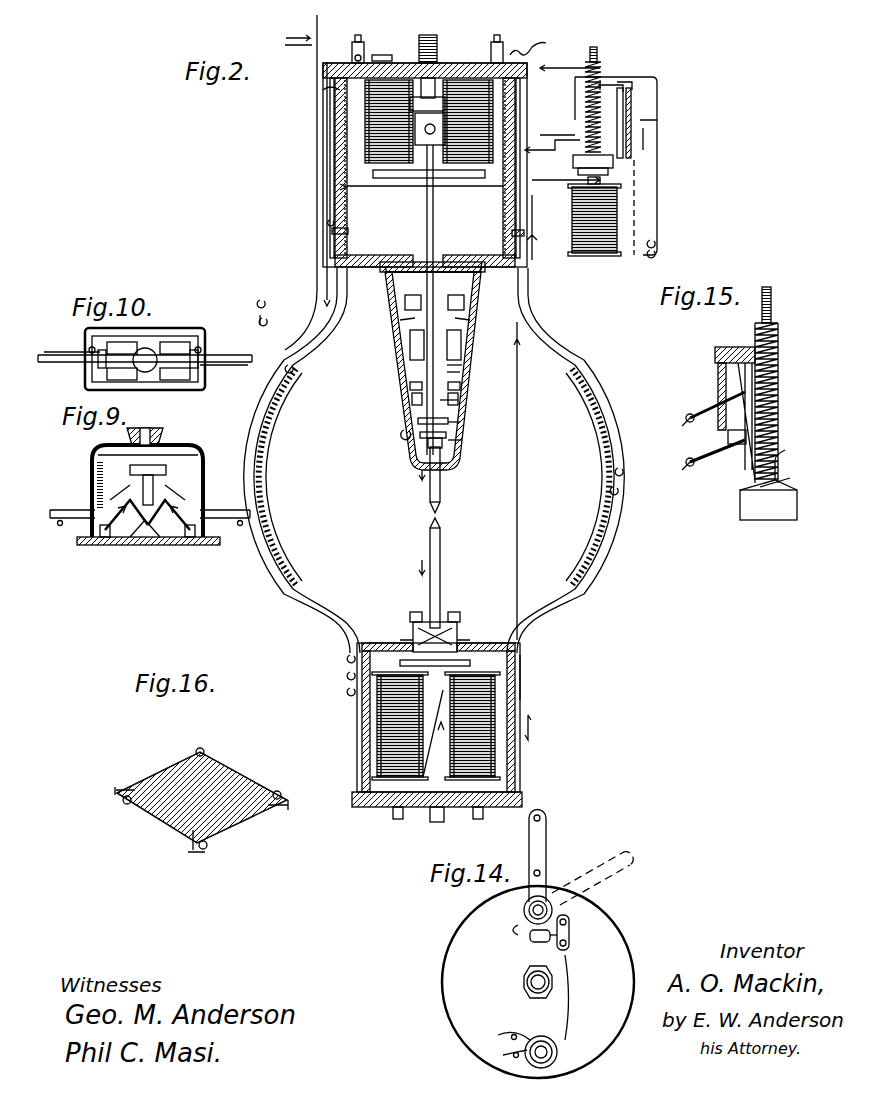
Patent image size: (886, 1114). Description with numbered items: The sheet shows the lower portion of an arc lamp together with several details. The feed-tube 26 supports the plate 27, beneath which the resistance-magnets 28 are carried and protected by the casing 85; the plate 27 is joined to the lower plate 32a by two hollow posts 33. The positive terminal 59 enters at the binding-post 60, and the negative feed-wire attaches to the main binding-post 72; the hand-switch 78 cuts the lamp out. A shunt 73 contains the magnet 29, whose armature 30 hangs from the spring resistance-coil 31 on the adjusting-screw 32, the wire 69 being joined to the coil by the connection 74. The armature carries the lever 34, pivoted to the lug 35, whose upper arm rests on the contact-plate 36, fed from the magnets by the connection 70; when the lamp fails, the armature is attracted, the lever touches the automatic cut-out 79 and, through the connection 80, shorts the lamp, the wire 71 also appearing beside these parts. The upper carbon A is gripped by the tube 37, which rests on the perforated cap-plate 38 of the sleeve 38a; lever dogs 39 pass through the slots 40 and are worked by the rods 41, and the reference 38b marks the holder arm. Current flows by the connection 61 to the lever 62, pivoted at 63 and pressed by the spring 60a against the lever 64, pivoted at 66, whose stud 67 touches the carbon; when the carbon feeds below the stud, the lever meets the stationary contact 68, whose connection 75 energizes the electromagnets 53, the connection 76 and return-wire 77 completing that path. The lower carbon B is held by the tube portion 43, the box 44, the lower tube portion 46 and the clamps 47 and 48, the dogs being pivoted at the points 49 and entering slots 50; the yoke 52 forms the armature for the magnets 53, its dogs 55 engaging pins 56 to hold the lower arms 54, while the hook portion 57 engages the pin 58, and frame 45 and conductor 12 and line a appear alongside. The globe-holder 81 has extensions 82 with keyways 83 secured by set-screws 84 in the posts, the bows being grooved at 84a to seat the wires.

In FIG. 2, the plate 12 is at (410, 178).
In FIG. 2, the feed-tube 26 is at (445, 78).
In FIG. 14, the feed-tube 26 is at (553, 984).
In FIG. 2, the plate 27 is at (428, 35).
In FIG. 14, the plate 27 is at (538, 982).
In FIG. 2, the resistance-magnets 28 is at (429, 121).
In FIG. 2, the magnet 29 is at (588, 216).
In FIG. 2, the armature 30 is at (614, 162).
In FIG. 15, the armature 30 is at (797, 514).
In FIG. 2, the spring resistance-coil 31 is at (630, 103).
In FIG. 15, the spring resistance-coil 31 is at (780, 372).
In FIG. 2, the adjusting-screw 32 is at (597, 58).
In FIG. 15, the adjusting-screw 32 is at (771, 308).
In FIG. 2, the lower plate 32a is at (480, 262).
In FIG. 2, the hollow posts 33 is at (335, 129).
In FIG. 2, the lever 34 is at (624, 118).
In FIG. 15, the lever 34 is at (780, 398).
In FIG. 2, the lug 35 is at (632, 140).
In FIG. 15, the lug 35 is at (728, 450).
In FIG. 2, the contact-plate 36 is at (633, 90).
In FIG. 15, the contact-plate 36 is at (715, 349).
In FIG. 2, the holder and clamp for upper carbon 37 is at (448, 415).
In FIG. 2, the perforated cap-plate 38 is at (443, 445).
In FIG. 2, the sleeve 38a is at (462, 358).
In FIG. 2, the holder arm 38b is at (470, 411).
In FIG. 2, the lever dogs or clutches 39 is at (463, 436).
In FIG. 2, the slots 40 is at (420, 436).
In FIG. 2, the rods 41 is at (460, 400).
In FIG. 2, the upper short tube portion 43 is at (418, 622).
In FIG. 9, the upper short tube portion 43 is at (145, 426).
In FIG. 2, the box 44 is at (448, 622).
In FIG. 9, the box 44 is at (185, 447).
In FIG. 2, the frame 45 is at (520, 686).
In FIG. 2, the lower tube portion 46 is at (408, 726).
In FIG. 10, the lower tube portion 46 is at (160, 345).
In FIG. 9, the lower tube portion 46 is at (145, 537).
In FIG. 2, the clamp 47 is at (480, 626).
In FIG. 10, the clamp 47 is at (225, 355).
In FIG. 9, the clamp 47 is at (110, 488).
In FIG. 2, the clamps or clutches 48 is at (350, 654).
In FIG. 10, the clamps or clutches 48 is at (190, 330).
In FIG. 9, the clamps or clutches 48 is at (162, 545).
In FIG. 2, the pivot points 49 is at (490, 610).
In FIG. 9, the pivot points 49 is at (105, 500).
In FIG. 9, the slots 50 is at (214, 472).
In FIG. 2, the yoke 52 is at (435, 790).
In FIG. 2, the electromagnets 53 is at (434, 733).
In FIG. 10, the lower arms 54 is at (198, 350).
In FIG. 9, the lower arms 54 is at (110, 540).
In FIG. 2, the dogs 55 is at (447, 661).
In FIG. 10, the dogs 55 is at (157, 357).
In FIG. 10, the pins 56 is at (90, 348).
In FIG. 9, the pins 56 is at (142, 518).
In FIG. 10, the hook portion 57 is at (150, 342).
In FIG. 9, the hook portion 57 is at (160, 465).
In FIG. 10, the pin 58 is at (120, 342).
In FIG. 2, the positive terminal 59 is at (352, 48).
In FIG. 2, the binding-post 60 is at (366, 50).
In FIG. 14, the binding-post 60 is at (524, 912).
In FIG. 2, the spring 60a is at (460, 371).
In FIG. 2, the connection 61 is at (328, 245).
In FIG. 2, the lever 62 is at (412, 355).
In FIG. 2, the pivot 63 is at (400, 325).
In FIG. 2, the lever 64 is at (412, 400).
In FIG. 2, the pivot point 66 is at (410, 390).
In FIG. 2, the stud 67 is at (404, 428).
In FIG. 2, the stationary contact 68 is at (405, 311).
In FIG. 2, the wire 69 is at (618, 493).
In FIG. 2, the connection 70 is at (475, 178).
In FIG. 15, the connection 70 is at (686, 428).
In FIG. 2, the wire 71 is at (658, 80).
In FIG. 15, the wire 71 is at (688, 474).
In FIG. 2, the main binding-post 72 is at (498, 42).
In FIG. 14, the main binding-post 72 is at (557, 1053).
In FIG. 2, the shunt 73 is at (659, 218).
In FIG. 2, the connection 74 is at (552, 141).
In FIG. 2, the connection 75 is at (470, 424).
In FIG. 2, the connection 76 is at (300, 350).
In FIG. 2, the return-wire 77 is at (514, 52).
In FIG. 2, the hand-switch 78 is at (395, 55).
In FIG. 14, the hand-switch 78 is at (580, 912).
In FIG. 2, the automatic cut-out 79 is at (628, 82).
In FIG. 2, the connection 80 is at (586, 58).
In FIG. 2, the globe-holder 81 is at (262, 406).
In FIG. 16, the globe-holder 81 is at (240, 775).
In FIG. 2, the vertical extensions 82 is at (330, 108).
In FIG. 2, the groove or keyway 83 is at (335, 147).
In FIG. 2, the set-screws 84 is at (332, 228).
In FIG. 16, the grooves 84a is at (280, 790).
In FIG. 2, the casing 85 is at (323, 86).
In FIG. 2, the upper carbon A is at (442, 494).
In FIG. 2, the lower carbon B is at (442, 542).
In FIG. 9, the section line a is at (95, 460).